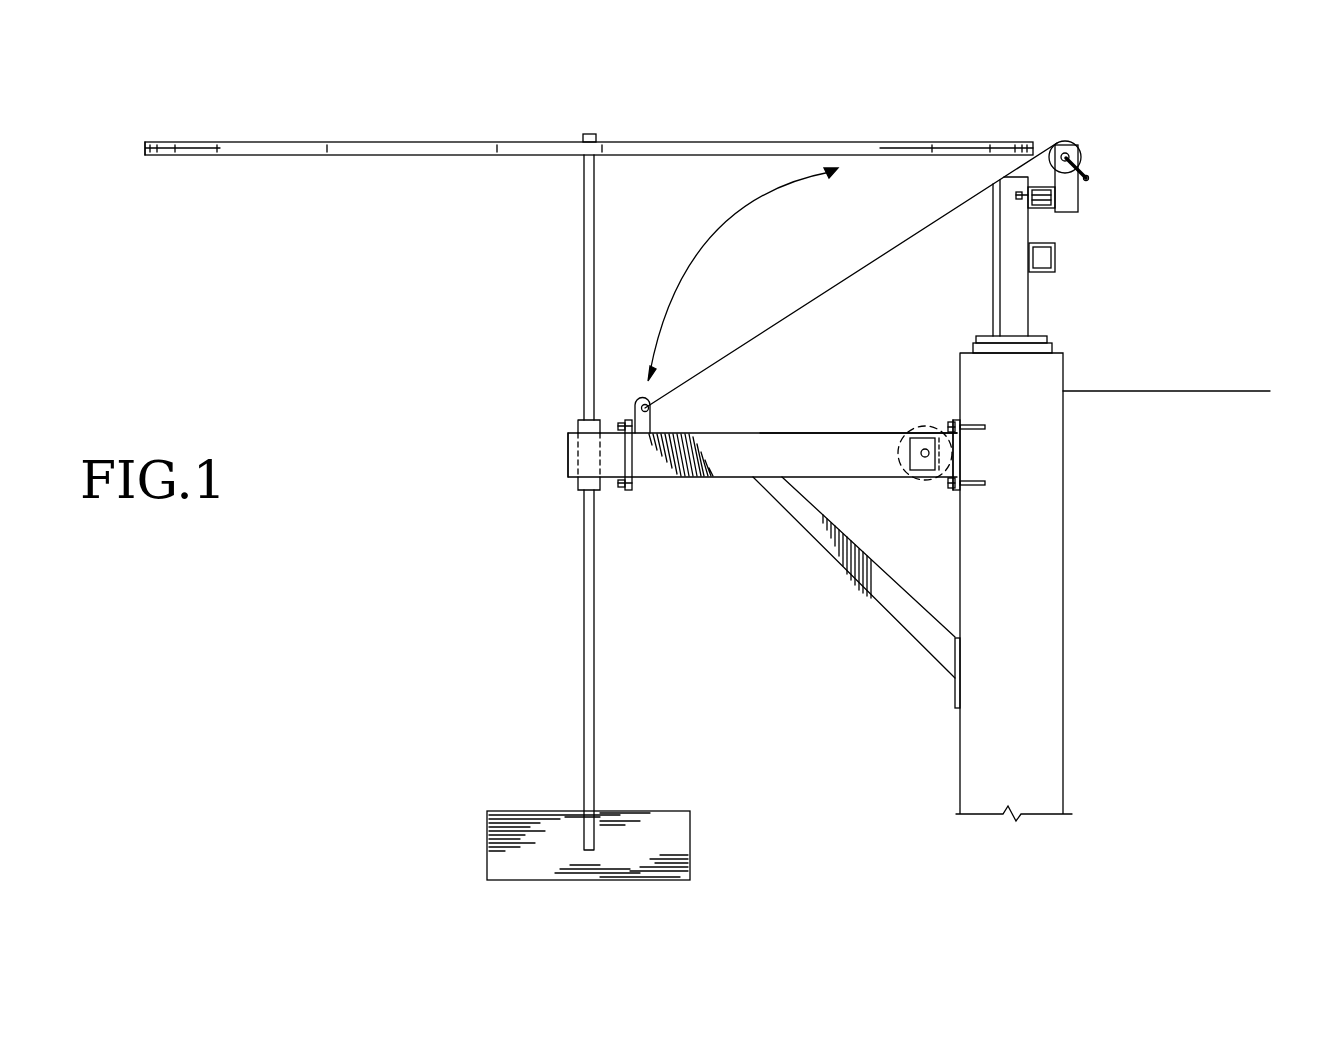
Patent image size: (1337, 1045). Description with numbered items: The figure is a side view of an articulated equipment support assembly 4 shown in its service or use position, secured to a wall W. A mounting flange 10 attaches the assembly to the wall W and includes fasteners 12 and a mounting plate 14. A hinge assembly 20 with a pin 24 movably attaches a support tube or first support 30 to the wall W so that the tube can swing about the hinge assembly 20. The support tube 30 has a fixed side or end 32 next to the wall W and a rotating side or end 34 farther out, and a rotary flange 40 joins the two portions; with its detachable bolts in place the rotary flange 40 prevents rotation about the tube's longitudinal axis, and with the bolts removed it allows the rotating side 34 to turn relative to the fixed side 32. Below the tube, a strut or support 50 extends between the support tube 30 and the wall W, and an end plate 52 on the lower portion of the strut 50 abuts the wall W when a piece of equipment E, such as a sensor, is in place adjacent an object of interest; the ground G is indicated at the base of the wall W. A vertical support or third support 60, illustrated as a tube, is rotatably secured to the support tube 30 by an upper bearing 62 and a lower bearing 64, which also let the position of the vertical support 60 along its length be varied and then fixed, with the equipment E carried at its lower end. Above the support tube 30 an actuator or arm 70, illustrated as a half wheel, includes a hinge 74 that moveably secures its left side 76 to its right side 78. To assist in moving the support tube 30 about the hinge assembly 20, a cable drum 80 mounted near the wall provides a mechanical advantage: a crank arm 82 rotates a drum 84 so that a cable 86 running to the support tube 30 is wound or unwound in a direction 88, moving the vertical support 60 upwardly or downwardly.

The articulated equipment support assembly 4 is at (330, 665).
The mounting flange 10 is at (955, 424).
The fasteners 12 is at (985, 484).
The mounting plate 14 is at (963, 450).
The hinge assembly 20 is at (928, 432).
The pin 24 is at (925, 479).
The support tube 30 is at (722, 486).
The fixed side 32 is at (862, 424).
The rotating side 34 is at (568, 455).
The rotary flange 40 is at (628, 491).
The strut 50 is at (866, 610).
The end plate 52 is at (957, 690).
The vertical support 60 is at (576, 662).
The upper bearing 62 is at (575, 424).
The lower bearing 64 is at (575, 487).
The actuator 70 is at (481, 163).
The hinge 74 is at (582, 140).
The left side 76 is at (243, 143).
The right side 78 is at (903, 142).
The cable drum 80 is at (1044, 134).
The crank arm 82 is at (1088, 180).
The drum 84 is at (1072, 145).
The cable 86 is at (862, 268).
The direction 88 is at (716, 240).
The wall W is at (962, 778).
The ground G is at (1180, 391).
The equipment E is at (527, 865).